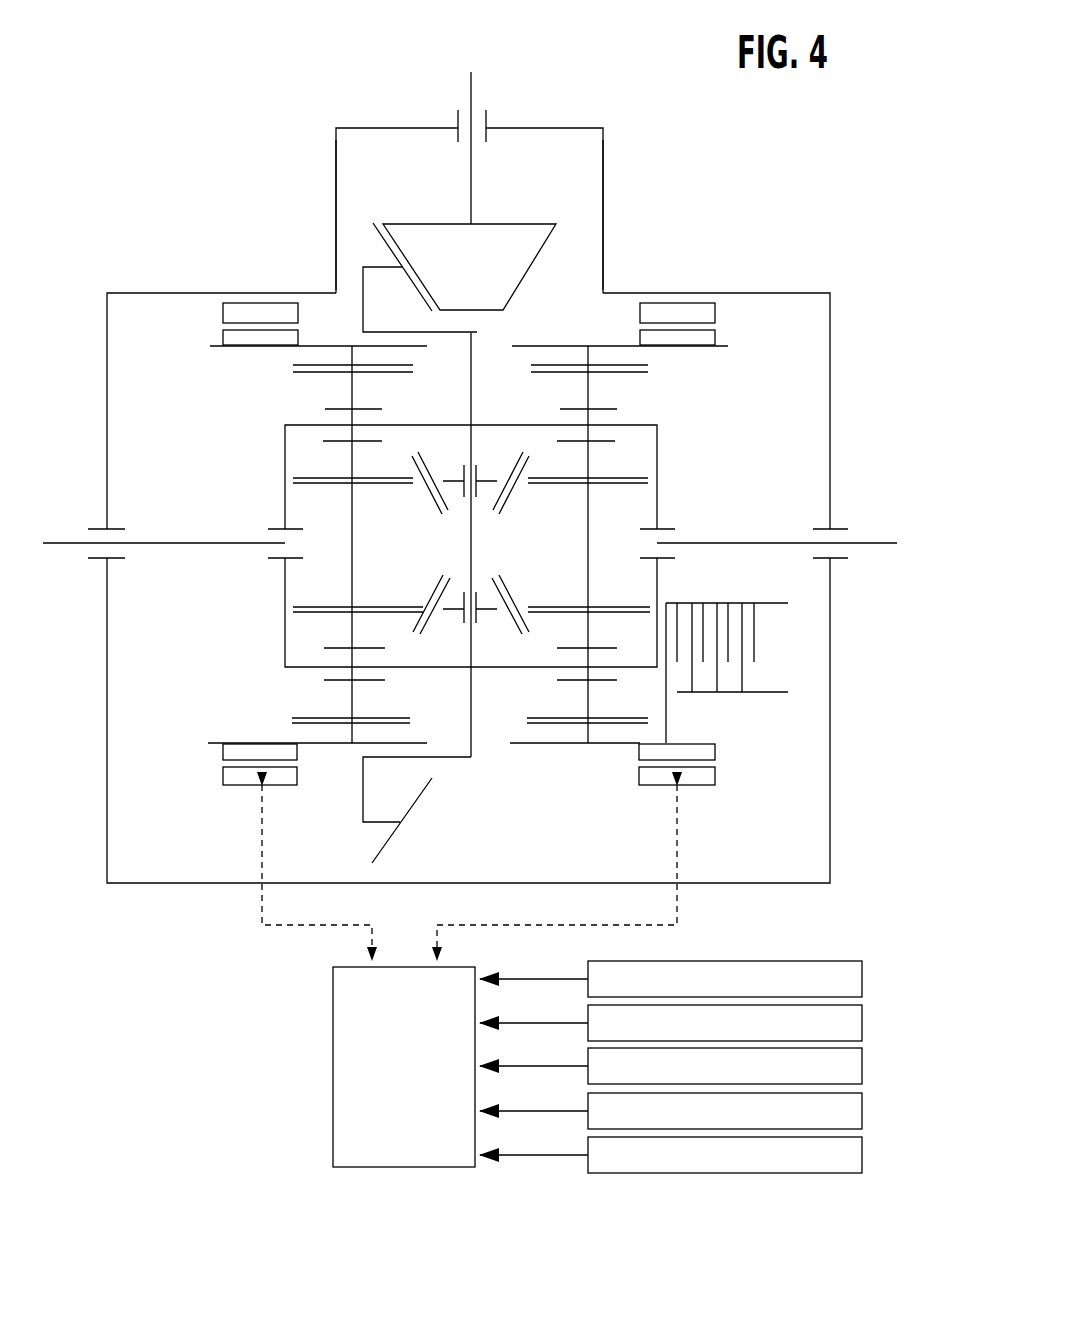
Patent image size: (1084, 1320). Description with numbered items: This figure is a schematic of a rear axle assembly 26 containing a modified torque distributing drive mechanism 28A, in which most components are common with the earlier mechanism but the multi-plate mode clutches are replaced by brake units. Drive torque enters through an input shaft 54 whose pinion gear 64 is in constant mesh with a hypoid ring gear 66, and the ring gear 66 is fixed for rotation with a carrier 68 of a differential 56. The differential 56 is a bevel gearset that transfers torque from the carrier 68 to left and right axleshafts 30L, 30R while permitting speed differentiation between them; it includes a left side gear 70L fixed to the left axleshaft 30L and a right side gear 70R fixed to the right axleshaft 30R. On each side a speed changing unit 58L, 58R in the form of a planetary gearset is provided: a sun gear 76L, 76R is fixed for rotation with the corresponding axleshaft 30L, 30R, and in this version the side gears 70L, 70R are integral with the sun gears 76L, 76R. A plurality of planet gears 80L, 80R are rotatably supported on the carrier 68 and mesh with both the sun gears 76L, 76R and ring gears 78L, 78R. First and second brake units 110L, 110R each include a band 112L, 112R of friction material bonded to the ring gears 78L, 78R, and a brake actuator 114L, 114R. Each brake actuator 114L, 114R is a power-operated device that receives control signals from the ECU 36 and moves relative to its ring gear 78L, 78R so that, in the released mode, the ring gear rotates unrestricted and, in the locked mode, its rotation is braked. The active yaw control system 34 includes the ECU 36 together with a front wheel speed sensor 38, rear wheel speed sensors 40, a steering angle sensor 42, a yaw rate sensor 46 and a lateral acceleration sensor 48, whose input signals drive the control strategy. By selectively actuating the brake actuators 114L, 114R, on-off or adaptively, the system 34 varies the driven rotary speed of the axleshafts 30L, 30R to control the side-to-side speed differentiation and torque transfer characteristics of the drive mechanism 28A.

The rear axle assembly 26 is at (188, 166).
The drive mechanism 28A is at (744, 162).
The left axleshaft 30L is at (60, 543).
The right axleshaft 30R is at (868, 543).
The yaw control system 34 is at (280, 1129).
The electronic control unit 36 is at (348, 1000).
The front wheel speed sensor 38 is at (862, 978).
The rear wheel speed sensor 40 is at (862, 1022).
The steering angle sensor 42 is at (862, 1066).
The yaw rate sensor 46 is at (862, 1110).
The lateral acceleration sensor 48 is at (862, 1155).
The input shaft 54 is at (472, 175).
The differential 56 is at (500, 446).
The left speed changing unit 58L is at (309, 735).
The right speed changing unit 58R is at (607, 735).
The pinion gear 64 is at (508, 270).
The hypoid ring gear 66 is at (421, 796).
The carrier 68 is at (503, 667).
The left side gear 70L is at (428, 496).
The right side gear 70R is at (510, 488).
The left sun gear 76L is at (355, 576).
The right sun gear 76R is at (588, 570).
The left ring gear 78L is at (319, 345).
The right ring gear 78R is at (608, 345).
The left planet gears 80L is at (354, 392).
The right planet gears 80R is at (590, 390).
The first brake unit 110L is at (215, 302).
The second brake unit 110R is at (733, 320).
The left band 112L is at (222, 750).
The right band 112R is at (707, 750).
The left brake actuator 114L is at (232, 778).
The right brake actuator 114R is at (700, 778).